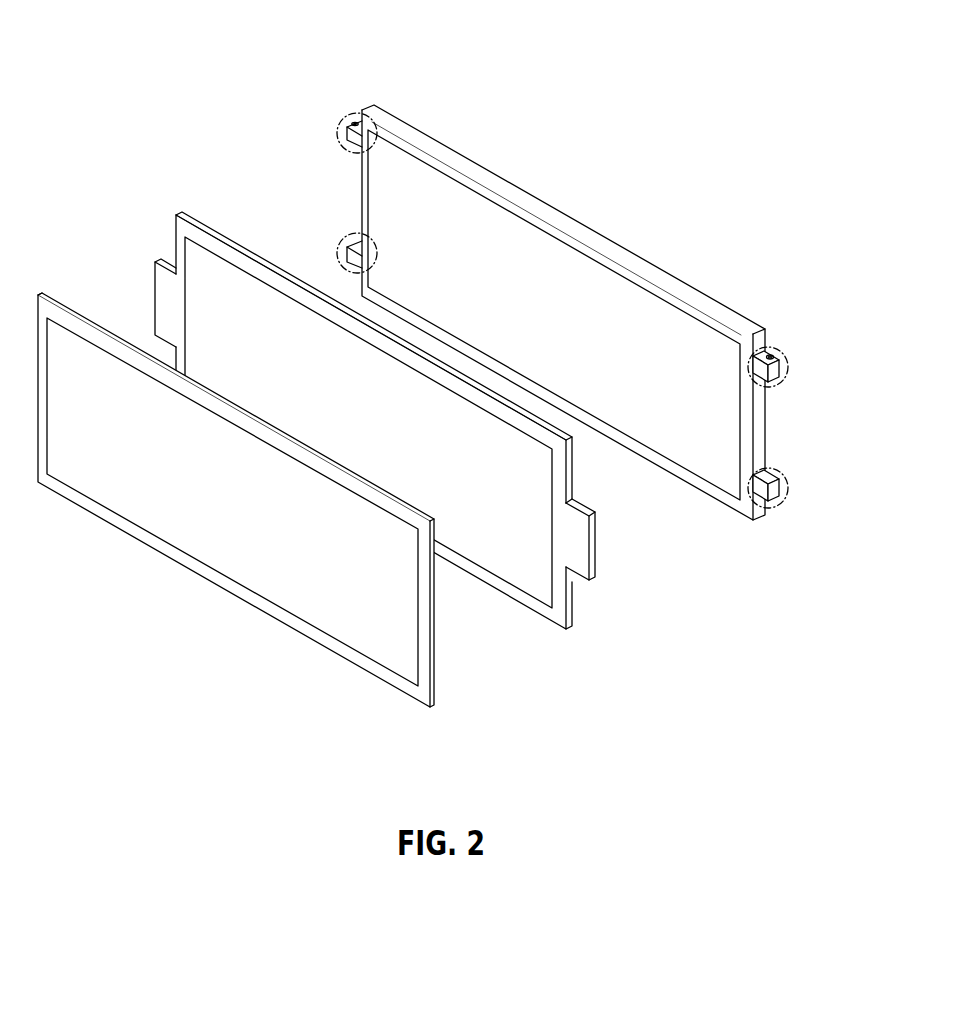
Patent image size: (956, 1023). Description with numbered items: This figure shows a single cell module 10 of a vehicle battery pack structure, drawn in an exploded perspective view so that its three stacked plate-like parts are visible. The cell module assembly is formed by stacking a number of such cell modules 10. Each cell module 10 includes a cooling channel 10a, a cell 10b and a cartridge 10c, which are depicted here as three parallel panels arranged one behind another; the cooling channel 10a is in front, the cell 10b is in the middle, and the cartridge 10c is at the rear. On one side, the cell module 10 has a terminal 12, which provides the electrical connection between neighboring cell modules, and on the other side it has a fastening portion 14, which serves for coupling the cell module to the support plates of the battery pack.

The cell module 10 is at (436, 391).
The cooling channel 10a is at (228, 593).
The cell 10b is at (206, 232).
The cartridge 10c is at (417, 133).
The terminal 12 is at (780, 348).
The fastening portion 14 is at (777, 470).